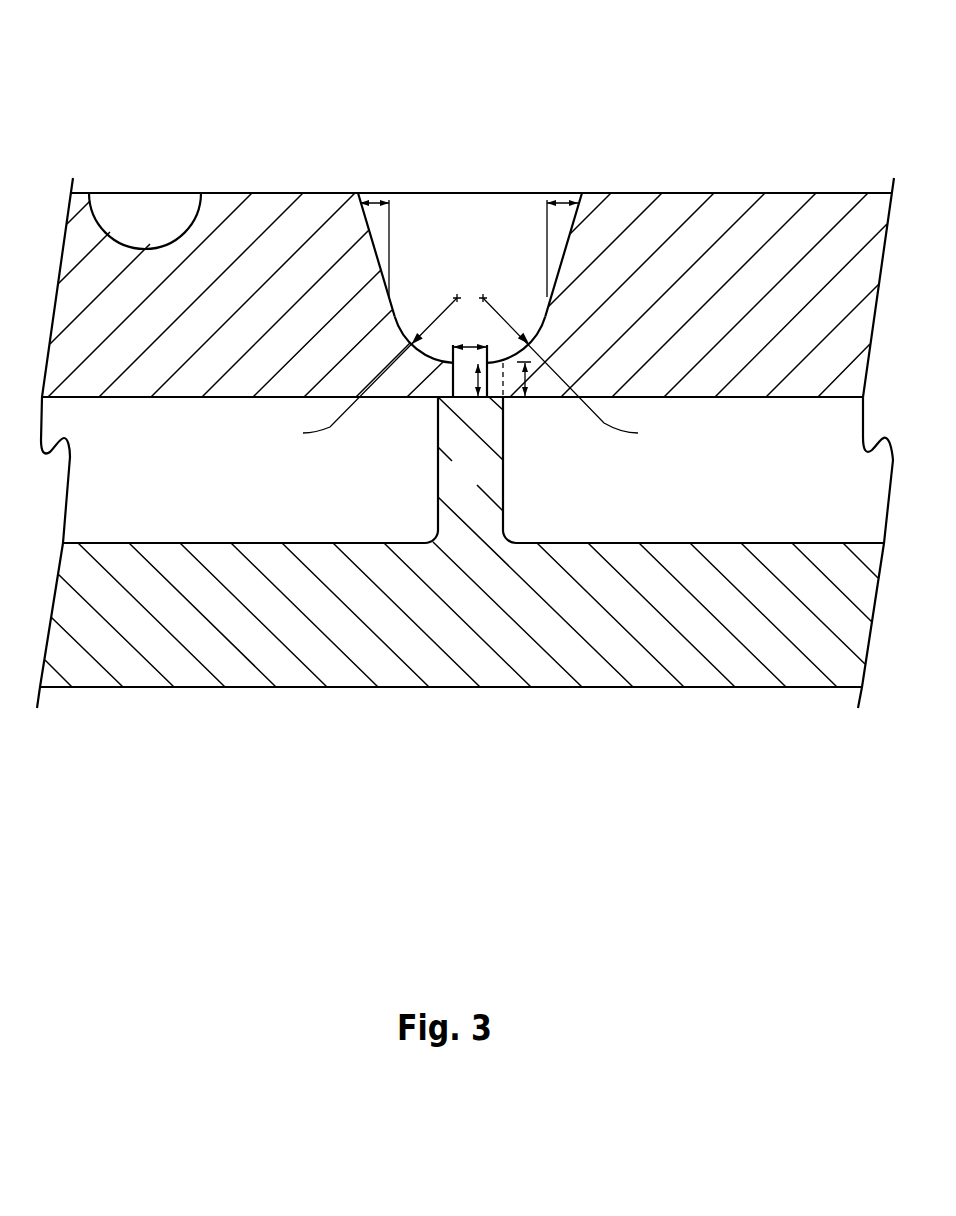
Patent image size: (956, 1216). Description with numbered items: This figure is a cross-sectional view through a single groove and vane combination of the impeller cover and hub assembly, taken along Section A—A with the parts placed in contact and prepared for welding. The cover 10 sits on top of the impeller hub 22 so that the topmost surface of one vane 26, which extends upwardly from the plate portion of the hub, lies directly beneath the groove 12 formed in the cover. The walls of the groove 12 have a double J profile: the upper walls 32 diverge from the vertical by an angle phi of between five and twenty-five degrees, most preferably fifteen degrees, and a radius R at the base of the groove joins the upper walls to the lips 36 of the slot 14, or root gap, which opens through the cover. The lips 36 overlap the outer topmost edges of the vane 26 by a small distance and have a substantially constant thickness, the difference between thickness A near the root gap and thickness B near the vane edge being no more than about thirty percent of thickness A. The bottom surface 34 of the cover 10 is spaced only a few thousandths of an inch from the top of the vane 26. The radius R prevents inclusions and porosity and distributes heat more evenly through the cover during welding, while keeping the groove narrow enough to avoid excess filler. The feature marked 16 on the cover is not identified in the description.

The cover 10 is at (727, 192).
The groove 12 is at (493, 97).
The slot 14 is at (470, 316).
The dimple 16 is at (169, 178).
The impeller hub 22 is at (305, 689).
The vane 26 is at (458, 474).
The upper walls 32 is at (560, 262).
The bottom surface 34 is at (415, 398).
The lips 36 is at (490, 362).